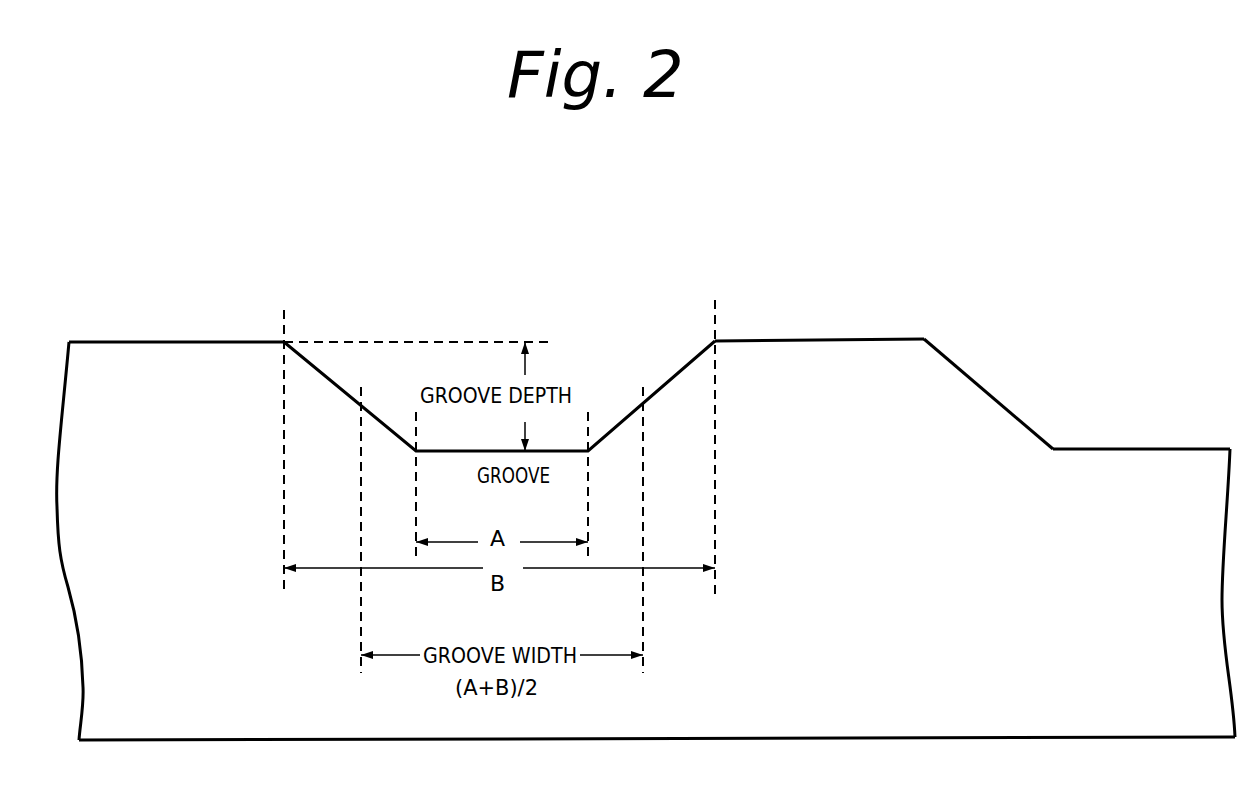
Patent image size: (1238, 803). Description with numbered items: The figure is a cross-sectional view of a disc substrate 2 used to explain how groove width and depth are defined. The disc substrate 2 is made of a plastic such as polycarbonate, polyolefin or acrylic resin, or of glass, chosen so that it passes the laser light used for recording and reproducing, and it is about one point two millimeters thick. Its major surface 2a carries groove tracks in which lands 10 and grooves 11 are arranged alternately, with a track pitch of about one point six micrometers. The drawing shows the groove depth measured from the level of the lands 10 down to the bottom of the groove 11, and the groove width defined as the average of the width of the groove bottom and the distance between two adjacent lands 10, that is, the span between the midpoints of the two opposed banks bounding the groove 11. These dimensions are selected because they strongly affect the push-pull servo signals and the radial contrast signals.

The disc substrate 2 is at (1011, 737).
The major surface 2a is at (591, 337).
The land 10 is at (815, 339).
The groove 11 is at (1130, 449).